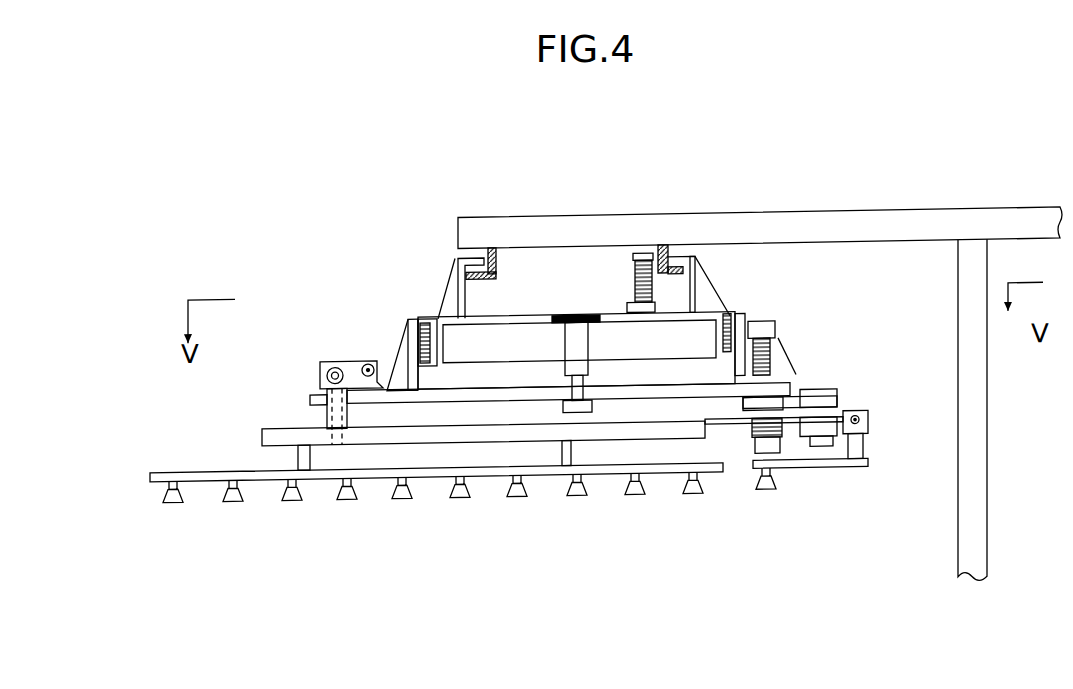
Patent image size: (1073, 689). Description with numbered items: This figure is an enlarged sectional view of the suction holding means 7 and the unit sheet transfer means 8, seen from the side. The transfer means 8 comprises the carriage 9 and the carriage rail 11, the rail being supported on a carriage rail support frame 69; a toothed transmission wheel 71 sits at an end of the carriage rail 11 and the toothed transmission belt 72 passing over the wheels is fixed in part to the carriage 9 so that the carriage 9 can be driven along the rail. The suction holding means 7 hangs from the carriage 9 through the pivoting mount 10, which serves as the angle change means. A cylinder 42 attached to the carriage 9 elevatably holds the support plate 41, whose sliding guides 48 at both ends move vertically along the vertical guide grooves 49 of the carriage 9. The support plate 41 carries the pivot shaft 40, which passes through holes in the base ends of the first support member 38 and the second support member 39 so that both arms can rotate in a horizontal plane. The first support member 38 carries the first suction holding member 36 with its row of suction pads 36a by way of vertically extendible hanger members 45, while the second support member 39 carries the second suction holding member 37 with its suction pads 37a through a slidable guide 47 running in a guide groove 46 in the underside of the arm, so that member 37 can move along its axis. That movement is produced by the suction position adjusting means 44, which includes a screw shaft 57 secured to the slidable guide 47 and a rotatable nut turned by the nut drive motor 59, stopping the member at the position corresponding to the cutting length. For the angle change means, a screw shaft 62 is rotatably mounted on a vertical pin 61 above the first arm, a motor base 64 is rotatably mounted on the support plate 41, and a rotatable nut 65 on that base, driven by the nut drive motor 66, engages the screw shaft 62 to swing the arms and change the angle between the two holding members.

The suction holding means 7 is at (836, 378).
The transfer means 8 is at (714, 268).
The carriage 9 is at (684, 336).
The pivoting mount 10 is at (326, 353).
The carriage rail 11 is at (492, 262).
The first suction holding member 36 is at (381, 478).
The suction pads 36a is at (462, 497).
The second suction holding member 37 is at (768, 473).
The suction pads 37a is at (766, 494).
The first support member 38 is at (537, 432).
The second support member 39 is at (834, 410).
The pivot shaft 40 is at (780, 372).
The support plate 41 is at (502, 400).
The cylinder 42 is at (574, 350).
The suction position adjusting means 44 is at (871, 454).
The hanger members 45 is at (296, 454).
The guide groove 46 is at (845, 421).
The slidable guide 47 is at (818, 447).
The sliding guides 48 is at (408, 320).
The vertical guide grooves 49 is at (428, 318).
The screw shaft 57 is at (869, 424).
The nut drive motor 59 is at (802, 397).
The vertical pin 61 is at (325, 440).
The screw shaft 62 is at (327, 374).
The motor base 64 is at (326, 388).
The rotatable nut 65 is at (320, 359).
The nut drive motor 66 is at (368, 359).
The carriage rail support frame 69 is at (986, 252).
The toothed transmission wheel 71 is at (634, 283).
The toothed transmission belt 72 is at (633, 257).